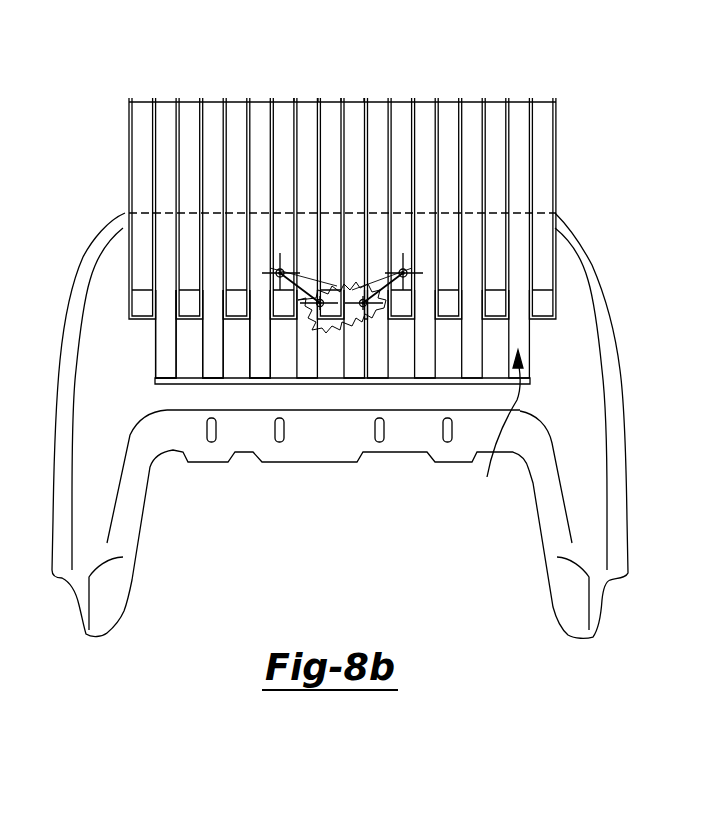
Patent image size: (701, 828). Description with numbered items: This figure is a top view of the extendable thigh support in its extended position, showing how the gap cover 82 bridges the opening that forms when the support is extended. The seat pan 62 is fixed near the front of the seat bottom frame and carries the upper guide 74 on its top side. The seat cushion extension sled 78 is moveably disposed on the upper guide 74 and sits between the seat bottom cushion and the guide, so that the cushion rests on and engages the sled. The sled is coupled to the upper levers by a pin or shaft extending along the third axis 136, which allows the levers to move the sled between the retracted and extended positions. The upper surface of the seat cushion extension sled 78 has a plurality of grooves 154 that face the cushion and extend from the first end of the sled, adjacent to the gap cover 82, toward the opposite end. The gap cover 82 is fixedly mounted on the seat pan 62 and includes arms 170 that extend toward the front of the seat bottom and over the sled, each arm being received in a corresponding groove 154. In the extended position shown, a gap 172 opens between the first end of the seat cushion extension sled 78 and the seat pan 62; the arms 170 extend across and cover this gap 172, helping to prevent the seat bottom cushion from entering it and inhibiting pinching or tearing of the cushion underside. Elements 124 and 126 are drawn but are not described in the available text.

The seat pan 62 is at (593, 247).
The upper guide 74 is at (337, 353).
The seat cushion extension sled 78 is at (130, 123).
The gap cover 82 is at (334, 378).
The link arm 124 is at (366, 305).
The link arm 126 is at (318, 305).
The third axis 136 is at (280, 273).
The grooves 154 is at (377, 108).
The arms 170 is at (262, 363).
The gap 172 is at (500, 430).